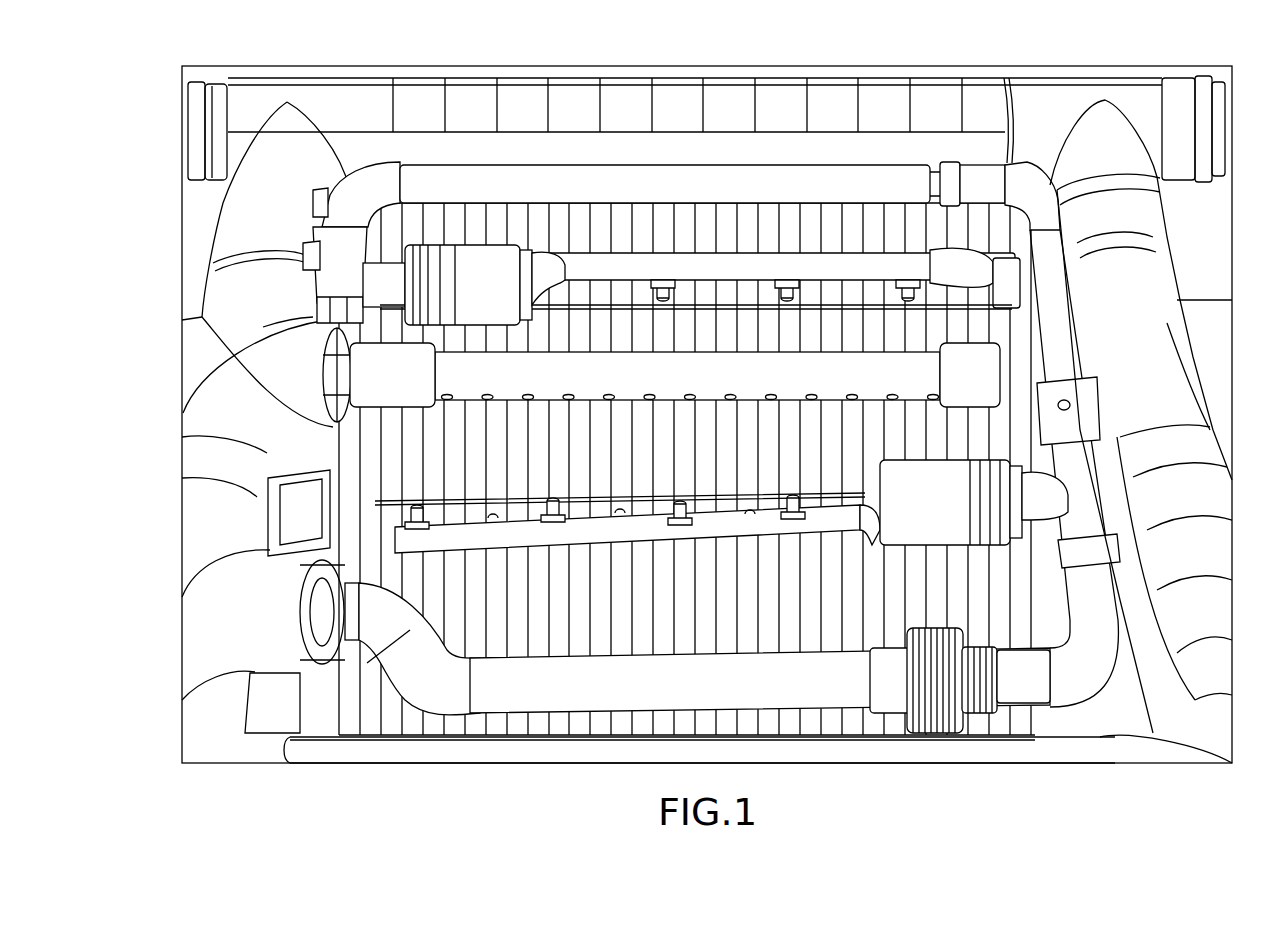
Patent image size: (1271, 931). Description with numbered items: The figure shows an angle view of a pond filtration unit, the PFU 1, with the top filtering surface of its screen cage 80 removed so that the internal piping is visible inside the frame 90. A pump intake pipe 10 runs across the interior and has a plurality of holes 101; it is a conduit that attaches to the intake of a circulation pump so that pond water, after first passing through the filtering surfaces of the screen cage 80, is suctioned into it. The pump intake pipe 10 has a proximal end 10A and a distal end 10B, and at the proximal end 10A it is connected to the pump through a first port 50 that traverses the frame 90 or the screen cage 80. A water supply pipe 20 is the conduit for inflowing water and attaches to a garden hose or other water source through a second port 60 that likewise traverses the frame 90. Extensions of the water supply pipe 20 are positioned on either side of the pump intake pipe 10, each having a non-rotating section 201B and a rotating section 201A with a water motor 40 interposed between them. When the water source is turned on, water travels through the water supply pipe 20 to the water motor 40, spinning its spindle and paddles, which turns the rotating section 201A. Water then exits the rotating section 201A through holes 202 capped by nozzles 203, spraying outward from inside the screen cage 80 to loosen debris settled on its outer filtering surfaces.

The PFU 1 is at (182, 212).
The frame 90 is at (255, 283).
The screen cage 80 is at (570, 722).
The non-rotating section 201B is at (795, 183).
The rotating section 201A is at (666, 260).
The pump intake pipe 10 is at (740, 351).
The proximal end 10A is at (425, 388).
The distal end 10B is at (973, 372).
The holes 101 is at (690, 395).
The water motor 40 is at (513, 302).
The first port 50 is at (312, 378).
The second port 60 is at (257, 613).
The water supply pipe 20 is at (372, 620).
The nozzles 203 is at (493, 517).
The holes 202 is at (793, 527).